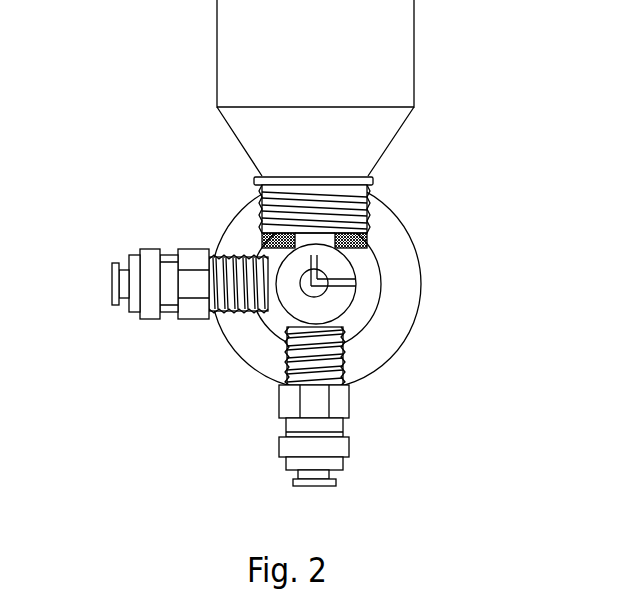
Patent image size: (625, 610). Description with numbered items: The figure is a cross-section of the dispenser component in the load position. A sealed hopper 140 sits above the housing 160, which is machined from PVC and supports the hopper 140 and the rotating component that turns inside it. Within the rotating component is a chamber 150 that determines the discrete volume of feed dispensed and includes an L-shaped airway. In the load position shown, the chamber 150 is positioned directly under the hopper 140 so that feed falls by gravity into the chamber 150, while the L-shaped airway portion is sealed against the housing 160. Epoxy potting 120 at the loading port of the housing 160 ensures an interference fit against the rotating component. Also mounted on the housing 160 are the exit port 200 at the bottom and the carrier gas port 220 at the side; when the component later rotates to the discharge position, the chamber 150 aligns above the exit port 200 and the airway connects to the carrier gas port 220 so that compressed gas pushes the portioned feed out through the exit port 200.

The epoxy potting 120 is at (262, 236).
The hopper 140 is at (411, 113).
The chamber 150 is at (313, 258).
The housing 160 is at (387, 308).
The exit port 200 is at (320, 487).
The carrier gas port 220 is at (102, 275).